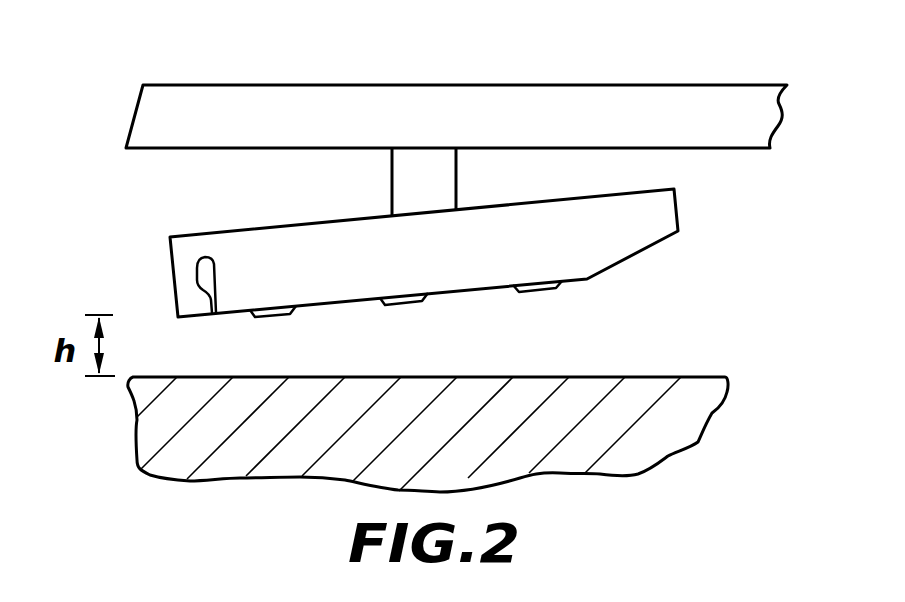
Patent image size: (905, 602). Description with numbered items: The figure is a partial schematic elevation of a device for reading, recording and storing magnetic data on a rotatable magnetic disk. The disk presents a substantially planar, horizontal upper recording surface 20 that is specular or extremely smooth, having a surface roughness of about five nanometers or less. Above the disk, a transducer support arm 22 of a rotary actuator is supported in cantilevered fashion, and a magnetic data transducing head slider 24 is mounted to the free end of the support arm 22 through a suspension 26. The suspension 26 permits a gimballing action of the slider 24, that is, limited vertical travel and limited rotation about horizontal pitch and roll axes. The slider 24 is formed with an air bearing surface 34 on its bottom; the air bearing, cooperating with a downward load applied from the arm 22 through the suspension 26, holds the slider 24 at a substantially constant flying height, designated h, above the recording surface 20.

The recording surface 20 is at (593, 377).
The transducer support arm 22 is at (292, 95).
The magnetic data transducing head slider 24 is at (220, 247).
The suspension 26 is at (403, 188).
The air bearing surface 34 is at (340, 302).